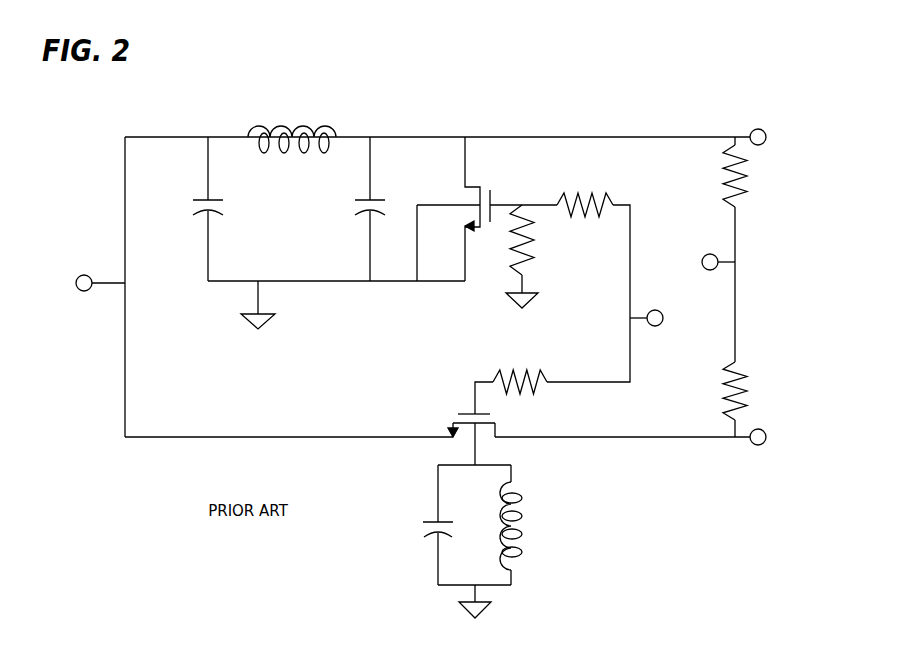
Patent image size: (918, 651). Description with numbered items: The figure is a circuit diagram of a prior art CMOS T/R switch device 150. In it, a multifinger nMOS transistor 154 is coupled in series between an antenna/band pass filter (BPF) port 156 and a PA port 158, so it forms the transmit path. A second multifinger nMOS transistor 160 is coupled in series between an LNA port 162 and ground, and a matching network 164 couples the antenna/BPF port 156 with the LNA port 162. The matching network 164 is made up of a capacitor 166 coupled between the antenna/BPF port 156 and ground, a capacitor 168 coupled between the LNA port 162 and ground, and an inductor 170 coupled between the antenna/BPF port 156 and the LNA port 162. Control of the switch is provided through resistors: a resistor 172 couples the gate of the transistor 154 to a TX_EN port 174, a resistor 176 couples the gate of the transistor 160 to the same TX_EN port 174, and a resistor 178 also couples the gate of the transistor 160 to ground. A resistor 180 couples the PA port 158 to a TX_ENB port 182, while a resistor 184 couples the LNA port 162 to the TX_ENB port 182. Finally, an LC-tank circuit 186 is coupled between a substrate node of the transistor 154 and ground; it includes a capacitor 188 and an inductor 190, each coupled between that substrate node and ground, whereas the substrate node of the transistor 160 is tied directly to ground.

The CMOS T/R switch device 150 is at (512, 84).
The multifinger nMOS transistor 154 is at (470, 414).
The antenna/band pass filter (BPF) port 156 is at (71, 301).
The PA port 158 is at (770, 416).
The multifinger nMOS transistor 160 is at (478, 186).
The LNA port 162 is at (759, 108).
The matching network 164 is at (240, 117).
The capacitor 166 is at (221, 200).
The capacitor 168 is at (356, 200).
The inductor 170 is at (293, 125).
The resistor 172 is at (507, 372).
The TX_EN port 174 is at (656, 360).
The resistor 176 is at (604, 197).
The resistor 178 is at (530, 266).
The resistor 180 is at (738, 362).
The TX_ENB port 182 is at (706, 242).
The resistor 184 is at (748, 176).
The LC-tank circuit 186 is at (415, 549).
The capacitor 188 is at (433, 521).
The inductor 190 is at (522, 512).